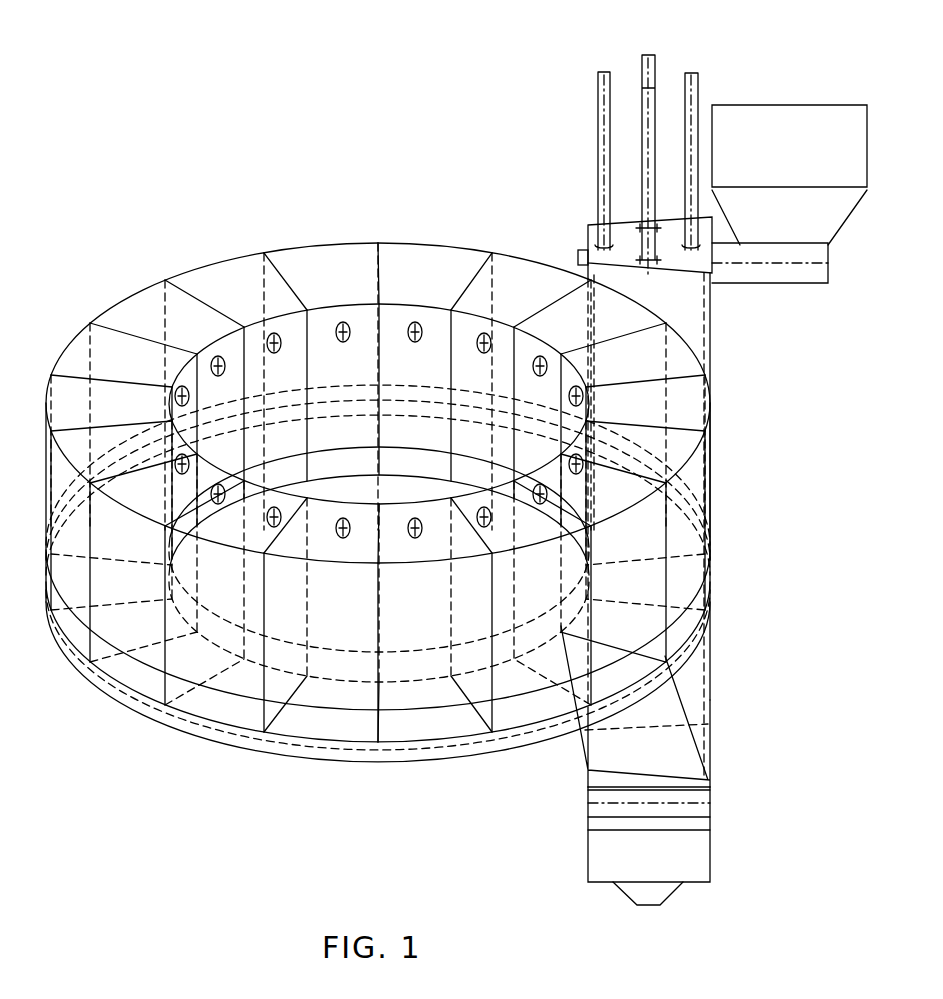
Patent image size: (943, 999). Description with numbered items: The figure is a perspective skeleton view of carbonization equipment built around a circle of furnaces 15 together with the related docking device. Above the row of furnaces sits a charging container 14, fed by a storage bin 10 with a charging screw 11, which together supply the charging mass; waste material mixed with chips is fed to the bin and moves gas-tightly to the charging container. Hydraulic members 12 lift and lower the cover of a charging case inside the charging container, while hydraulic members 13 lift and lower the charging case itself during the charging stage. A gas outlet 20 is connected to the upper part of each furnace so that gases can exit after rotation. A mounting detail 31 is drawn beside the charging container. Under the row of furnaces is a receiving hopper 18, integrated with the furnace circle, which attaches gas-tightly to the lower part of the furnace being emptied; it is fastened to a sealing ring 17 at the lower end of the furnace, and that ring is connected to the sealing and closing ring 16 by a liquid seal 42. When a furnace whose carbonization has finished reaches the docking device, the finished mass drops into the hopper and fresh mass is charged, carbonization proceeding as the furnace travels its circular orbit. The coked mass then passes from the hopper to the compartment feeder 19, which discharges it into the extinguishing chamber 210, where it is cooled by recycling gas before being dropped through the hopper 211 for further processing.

The storage bin 10 is at (840, 218).
The charging screw 11 is at (760, 282).
The hydraulic members 12 is at (762, 78).
The hydraulic members 13 is at (641, 88).
The charging container 14 is at (697, 339).
The furnaces 15 is at (233, 678).
The sealing and closing ring 16 is at (343, 735).
The sealing ring 17 is at (387, 752).
The receiving hopper 18 is at (698, 675).
The compartment feeder 19 is at (705, 815).
The gas outlet 20 is at (413, 317).
The mounting bracket 31 is at (580, 250).
The liquid seal 42 is at (487, 757).
The extinguishing chamber 210 is at (800, 878).
The hopper 211 is at (670, 893).